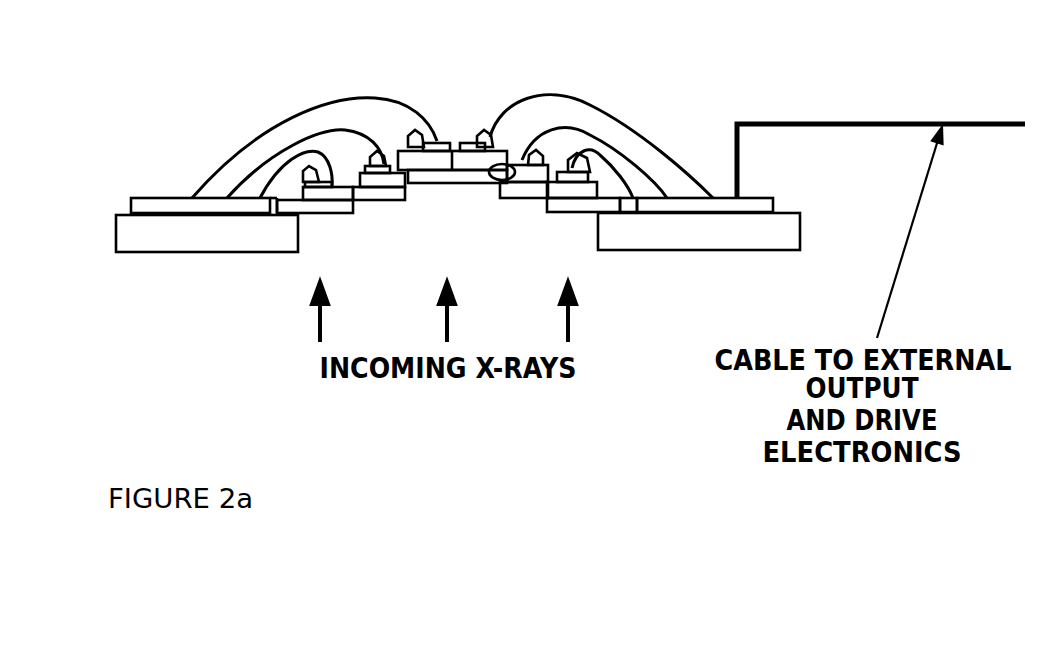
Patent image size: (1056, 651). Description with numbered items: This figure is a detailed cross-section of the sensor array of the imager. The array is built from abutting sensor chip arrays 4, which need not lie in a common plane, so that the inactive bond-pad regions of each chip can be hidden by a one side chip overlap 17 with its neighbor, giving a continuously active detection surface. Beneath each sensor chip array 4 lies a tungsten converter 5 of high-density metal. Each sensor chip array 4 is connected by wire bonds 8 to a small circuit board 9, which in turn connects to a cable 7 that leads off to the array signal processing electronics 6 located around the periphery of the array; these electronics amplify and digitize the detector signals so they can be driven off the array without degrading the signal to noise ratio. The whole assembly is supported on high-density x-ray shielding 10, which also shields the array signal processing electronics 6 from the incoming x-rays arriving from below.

The sensor chip array 4 is at (335, 155).
The tungsten converter 5 is at (336, 221).
The array signal processing electronics 6 is at (770, 191).
The cable 7 is at (715, 172).
The wire bond 8 is at (515, 128).
The small circuit board 9 is at (459, 122).
The high-density x-ray shielding 10 is at (818, 228).
The one side chip overlap 17 is at (498, 180).